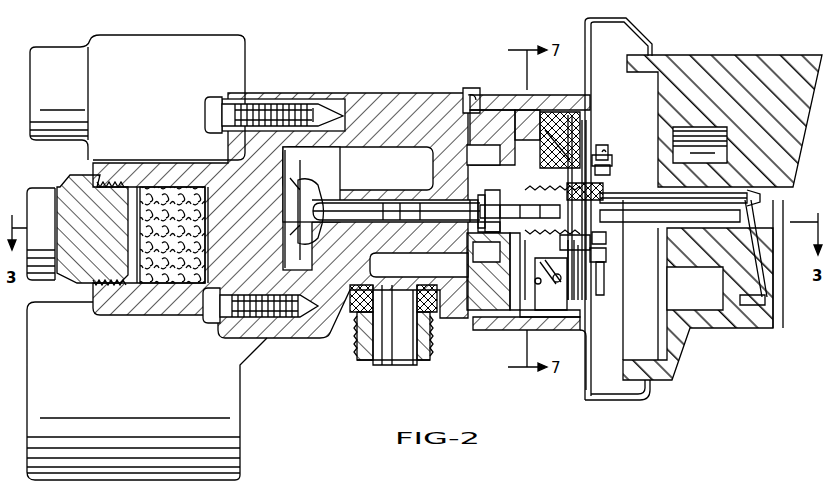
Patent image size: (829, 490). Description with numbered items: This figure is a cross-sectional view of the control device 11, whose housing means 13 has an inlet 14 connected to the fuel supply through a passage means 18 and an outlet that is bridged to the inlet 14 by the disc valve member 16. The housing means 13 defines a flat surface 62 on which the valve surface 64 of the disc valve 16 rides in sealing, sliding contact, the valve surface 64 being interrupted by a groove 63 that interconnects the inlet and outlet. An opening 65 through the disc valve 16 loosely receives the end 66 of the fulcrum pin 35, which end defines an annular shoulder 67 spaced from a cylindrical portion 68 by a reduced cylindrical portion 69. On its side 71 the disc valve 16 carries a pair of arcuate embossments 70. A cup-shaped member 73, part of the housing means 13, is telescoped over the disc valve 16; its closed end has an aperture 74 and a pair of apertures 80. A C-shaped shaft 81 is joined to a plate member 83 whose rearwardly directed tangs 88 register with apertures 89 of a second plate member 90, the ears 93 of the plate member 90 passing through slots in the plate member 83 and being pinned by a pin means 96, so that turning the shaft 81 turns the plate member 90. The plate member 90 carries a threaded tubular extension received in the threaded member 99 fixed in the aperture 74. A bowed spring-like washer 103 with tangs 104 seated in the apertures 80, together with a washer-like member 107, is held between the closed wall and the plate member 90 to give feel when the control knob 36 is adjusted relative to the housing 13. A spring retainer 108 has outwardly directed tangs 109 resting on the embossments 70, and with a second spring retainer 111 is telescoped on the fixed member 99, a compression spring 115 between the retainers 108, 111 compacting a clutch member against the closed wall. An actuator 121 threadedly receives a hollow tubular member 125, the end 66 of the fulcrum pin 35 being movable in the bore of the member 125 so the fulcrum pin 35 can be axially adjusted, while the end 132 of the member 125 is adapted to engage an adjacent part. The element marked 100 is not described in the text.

The control device 11 is at (685, 48).
The housing means 13 is at (333, 92).
The inlet 14 is at (460, 298).
The disc valve member 16 is at (487, 113).
The passage means 18 is at (388, 352).
The fulcrum pin 35 is at (360, 205).
The control knob 36 is at (753, 56).
The flat surface 62 is at (473, 92).
The groove 63 is at (500, 125).
The valve surface 64 is at (452, 270).
The opening 65 is at (490, 195).
The end of the fulcrum pin 66 is at (486, 232).
The annular shoulder 67 is at (480, 214).
The cylindrical portion 68 is at (540, 280).
The reduced cylindrical portion 69 is at (480, 198).
The arcuate embossments 70 is at (530, 118).
The side of the disc valve 71 is at (505, 322).
The cup-shaped member 73 is at (541, 325).
The aperture 74 is at (562, 262).
The apertures 80 is at (578, 300).
The C-shaped shaft 81 is at (780, 202).
The plate member 83 is at (603, 168).
The rearwardly directed tangs 88 is at (602, 255).
The apertures 89 is at (602, 270).
The plate member 90 is at (600, 150).
The ears 93 is at (612, 230).
The pin means 96 is at (606, 240).
The member 99 is at (601, 188).
The gear 100 is at (552, 204).
The bowed spring-like washer 103 is at (575, 287).
The tangs 104 is at (573, 290).
The washer-like member 107 is at (602, 158).
The spring retainer 108 is at (546, 288).
The outwardly directed tangs 109 is at (562, 120).
The spring retainer 111 is at (562, 131).
The compression spring 115 is at (566, 146).
The actuator 121 is at (483, 156).
The hollow tubular member 125 is at (478, 224).
The end of the threaded member 132 is at (476, 202).